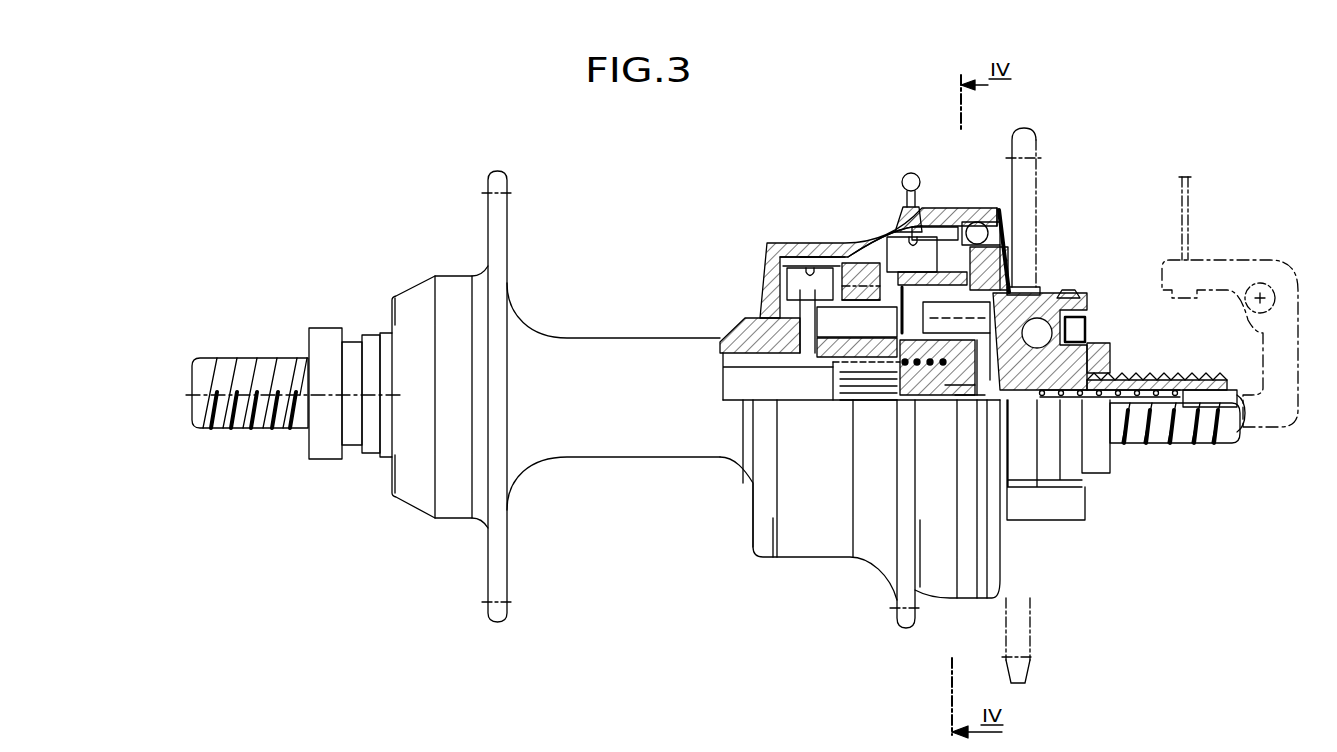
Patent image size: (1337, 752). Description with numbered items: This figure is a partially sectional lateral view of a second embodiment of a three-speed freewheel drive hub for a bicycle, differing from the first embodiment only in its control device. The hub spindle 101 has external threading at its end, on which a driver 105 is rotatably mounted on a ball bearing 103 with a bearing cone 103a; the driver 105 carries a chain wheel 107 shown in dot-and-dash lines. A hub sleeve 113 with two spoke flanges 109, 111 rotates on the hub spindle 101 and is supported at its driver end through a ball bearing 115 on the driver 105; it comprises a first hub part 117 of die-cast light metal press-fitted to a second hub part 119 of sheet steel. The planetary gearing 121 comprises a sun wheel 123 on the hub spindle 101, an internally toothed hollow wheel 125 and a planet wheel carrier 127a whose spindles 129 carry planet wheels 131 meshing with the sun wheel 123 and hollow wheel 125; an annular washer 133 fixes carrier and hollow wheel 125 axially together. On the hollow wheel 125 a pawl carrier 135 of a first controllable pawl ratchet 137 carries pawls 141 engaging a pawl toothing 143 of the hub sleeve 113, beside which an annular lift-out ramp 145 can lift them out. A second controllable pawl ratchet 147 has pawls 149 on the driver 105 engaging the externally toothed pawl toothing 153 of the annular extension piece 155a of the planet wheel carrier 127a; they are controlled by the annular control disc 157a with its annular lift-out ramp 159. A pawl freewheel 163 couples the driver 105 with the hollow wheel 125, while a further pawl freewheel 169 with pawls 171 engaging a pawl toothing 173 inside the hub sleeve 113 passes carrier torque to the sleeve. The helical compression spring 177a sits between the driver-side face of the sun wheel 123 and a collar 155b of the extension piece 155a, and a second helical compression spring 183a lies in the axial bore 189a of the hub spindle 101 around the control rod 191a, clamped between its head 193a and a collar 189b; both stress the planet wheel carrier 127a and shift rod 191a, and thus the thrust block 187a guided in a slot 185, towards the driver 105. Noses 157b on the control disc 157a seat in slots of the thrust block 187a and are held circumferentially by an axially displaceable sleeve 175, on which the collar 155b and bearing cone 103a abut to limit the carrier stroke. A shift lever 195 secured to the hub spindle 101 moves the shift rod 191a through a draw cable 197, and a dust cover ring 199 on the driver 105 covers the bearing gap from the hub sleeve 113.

The hub spindle 101 is at (250, 428).
The ball bearing 103 is at (1045, 332).
The bearing cone 103a is at (1087, 323).
The driver 105 is at (1010, 250).
The chain wheel 107 is at (1035, 148).
The spoke flange 109 is at (910, 178).
The spoke flange 111 is at (503, 180).
The hub sleeve 113 is at (757, 228).
The ball bearing 115 is at (1008, 227).
The first hub part 117 is at (603, 347).
The second hub part 119 is at (785, 247).
The planetary gearing 121 is at (872, 258).
The sun wheel 123 is at (860, 387).
The hollow wheel 125 is at (848, 270).
The planet wheel carrier 127a is at (828, 368).
The spindles 129 is at (777, 303).
The planet wheels 131 is at (852, 348).
The annular washer 133 is at (900, 245).
The pawl carrier 135 is at (1013, 267).
The first controllable pawl ratchet 137 is at (944, 226).
The pawls 141 is at (915, 250).
The pawl toothing 143 is at (964, 220).
The annular lift-out ramp 145 is at (923, 203).
The second controllable pawl ratchet 147 is at (997, 383).
The pawls 149 is at (970, 331).
The pawl toothing 153 is at (910, 370).
The annular extension piece 155a is at (920, 360).
The collar 155b is at (925, 372).
The control disc 157a is at (883, 322).
The noses 157b is at (948, 398).
The annular lift-out ramp 159 is at (982, 385).
The pawl freewheel 163 is at (1040, 280).
The pawl freewheel 169 is at (782, 266).
The pawls 171 is at (790, 285).
The pawl toothing 173 is at (810, 262).
The sleeve 175 is at (1080, 302).
The helical compression spring 177a is at (933, 366).
The second helical compression spring 183a is at (1165, 400).
The slot 185 is at (1092, 362).
The thrust block 187a is at (962, 408).
The axial bore 189a is at (1173, 388).
The collar 189b is at (1040, 397).
The control rod 191a is at (1095, 403).
The head 193a is at (1237, 420).
The shift lever 195 is at (1263, 357).
The draw cable 197 is at (1185, 220).
The dust cover ring 199 is at (1000, 210).